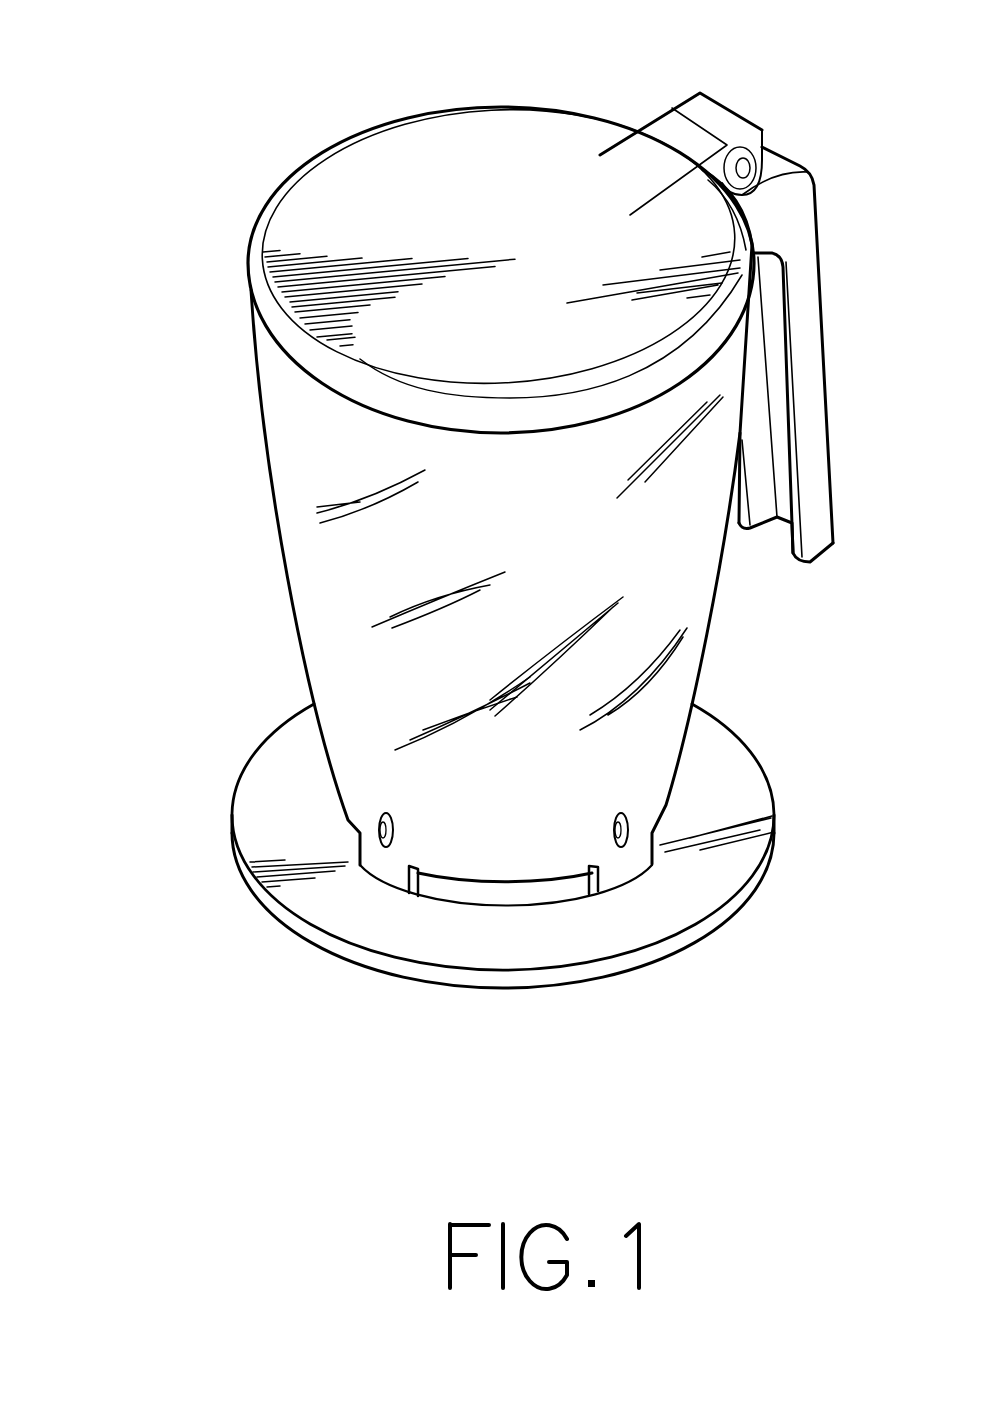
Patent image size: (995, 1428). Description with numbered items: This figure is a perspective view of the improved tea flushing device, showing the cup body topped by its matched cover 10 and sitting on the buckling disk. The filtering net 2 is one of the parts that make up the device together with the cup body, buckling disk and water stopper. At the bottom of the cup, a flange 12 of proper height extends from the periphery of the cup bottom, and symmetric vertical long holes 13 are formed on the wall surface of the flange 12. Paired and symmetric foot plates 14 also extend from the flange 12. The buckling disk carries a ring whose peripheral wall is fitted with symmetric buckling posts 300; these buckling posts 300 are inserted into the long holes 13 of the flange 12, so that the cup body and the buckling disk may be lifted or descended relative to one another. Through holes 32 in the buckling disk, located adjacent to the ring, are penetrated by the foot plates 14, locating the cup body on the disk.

The cover 10 is at (378, 157).
The filtering net 2 is at (313, 573).
The flange 12 is at (395, 874).
The vertical long holes 13 is at (389, 815).
The foot plates 14 is at (518, 870).
The through holes 32 is at (392, 894).
The buckling posts 300 is at (383, 847).